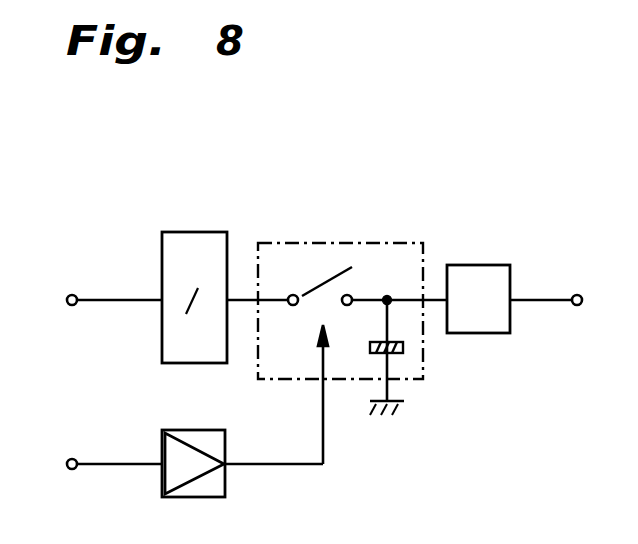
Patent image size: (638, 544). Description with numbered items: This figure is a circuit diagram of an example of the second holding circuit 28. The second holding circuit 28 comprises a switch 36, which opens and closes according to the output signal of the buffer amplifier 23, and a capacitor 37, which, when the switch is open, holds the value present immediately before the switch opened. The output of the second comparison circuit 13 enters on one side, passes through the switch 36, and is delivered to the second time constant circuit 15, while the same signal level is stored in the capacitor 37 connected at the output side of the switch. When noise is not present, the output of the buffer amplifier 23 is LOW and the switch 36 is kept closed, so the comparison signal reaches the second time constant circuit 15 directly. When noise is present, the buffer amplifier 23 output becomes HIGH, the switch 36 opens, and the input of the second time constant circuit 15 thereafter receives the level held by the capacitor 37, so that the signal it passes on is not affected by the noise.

The second comparison circuit 13 is at (195, 232).
The second time constant circuit 15 is at (483, 265).
The buffer amplifier 23 is at (193, 430).
The second holding circuit 28 is at (390, 243).
The switch 36 is at (320, 275).
The capacitor 37 is at (400, 354).